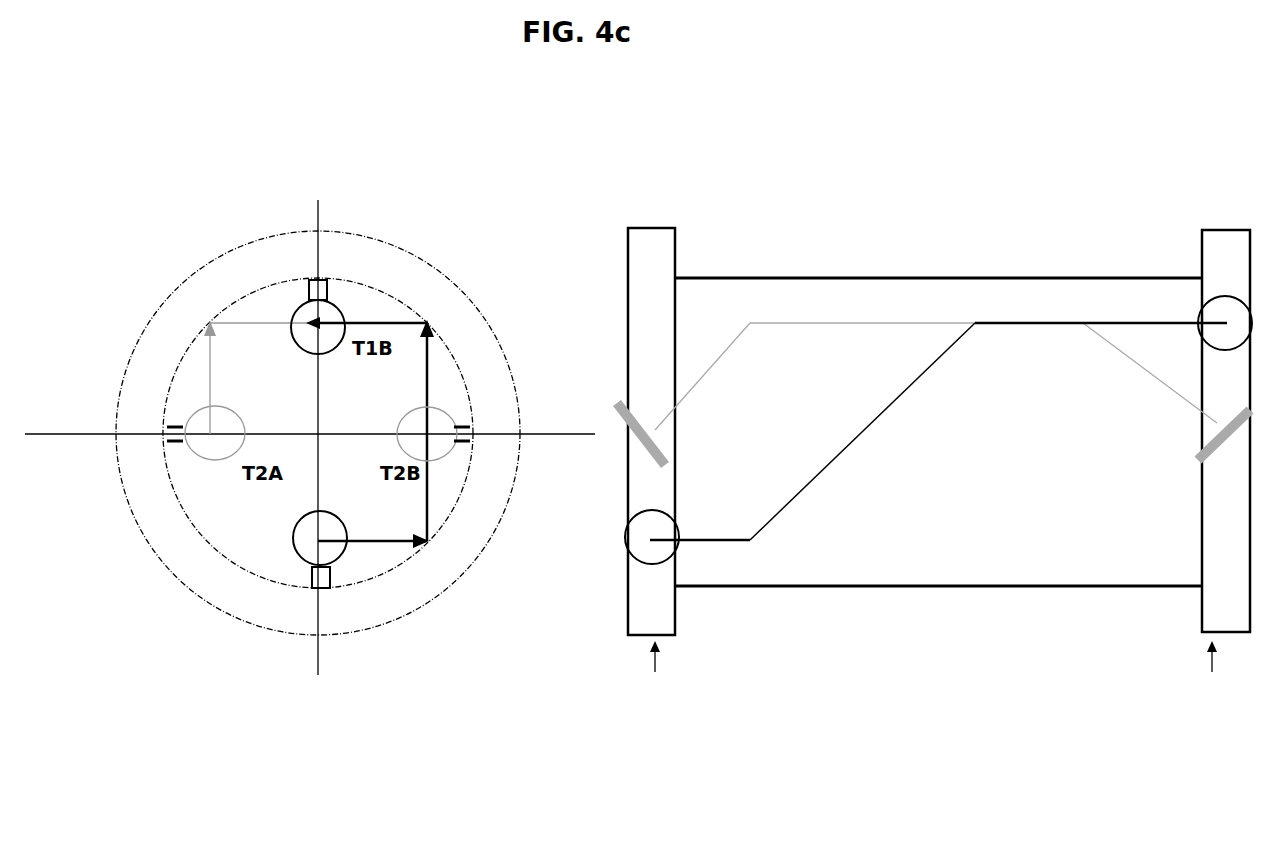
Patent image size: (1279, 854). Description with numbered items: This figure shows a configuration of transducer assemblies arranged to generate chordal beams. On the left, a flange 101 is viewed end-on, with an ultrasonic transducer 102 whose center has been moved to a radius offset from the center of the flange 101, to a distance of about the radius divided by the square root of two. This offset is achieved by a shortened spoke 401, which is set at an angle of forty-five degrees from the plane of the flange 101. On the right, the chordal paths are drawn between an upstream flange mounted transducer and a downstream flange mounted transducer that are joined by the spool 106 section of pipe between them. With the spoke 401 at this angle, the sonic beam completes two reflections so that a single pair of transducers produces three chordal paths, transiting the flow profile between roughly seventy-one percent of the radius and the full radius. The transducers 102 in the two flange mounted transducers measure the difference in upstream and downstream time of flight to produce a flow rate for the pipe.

The flange 101 is at (216, 260).
The ultrasonic transducer 102 is at (300, 517).
The shortened spoke 401 is at (336, 580).
The spool 106 is at (940, 592).